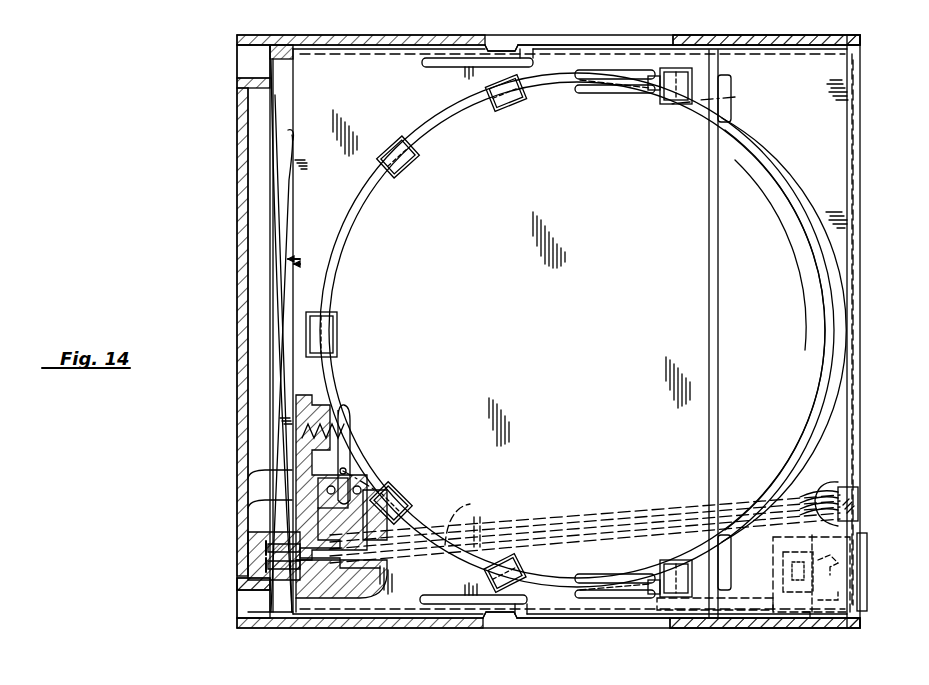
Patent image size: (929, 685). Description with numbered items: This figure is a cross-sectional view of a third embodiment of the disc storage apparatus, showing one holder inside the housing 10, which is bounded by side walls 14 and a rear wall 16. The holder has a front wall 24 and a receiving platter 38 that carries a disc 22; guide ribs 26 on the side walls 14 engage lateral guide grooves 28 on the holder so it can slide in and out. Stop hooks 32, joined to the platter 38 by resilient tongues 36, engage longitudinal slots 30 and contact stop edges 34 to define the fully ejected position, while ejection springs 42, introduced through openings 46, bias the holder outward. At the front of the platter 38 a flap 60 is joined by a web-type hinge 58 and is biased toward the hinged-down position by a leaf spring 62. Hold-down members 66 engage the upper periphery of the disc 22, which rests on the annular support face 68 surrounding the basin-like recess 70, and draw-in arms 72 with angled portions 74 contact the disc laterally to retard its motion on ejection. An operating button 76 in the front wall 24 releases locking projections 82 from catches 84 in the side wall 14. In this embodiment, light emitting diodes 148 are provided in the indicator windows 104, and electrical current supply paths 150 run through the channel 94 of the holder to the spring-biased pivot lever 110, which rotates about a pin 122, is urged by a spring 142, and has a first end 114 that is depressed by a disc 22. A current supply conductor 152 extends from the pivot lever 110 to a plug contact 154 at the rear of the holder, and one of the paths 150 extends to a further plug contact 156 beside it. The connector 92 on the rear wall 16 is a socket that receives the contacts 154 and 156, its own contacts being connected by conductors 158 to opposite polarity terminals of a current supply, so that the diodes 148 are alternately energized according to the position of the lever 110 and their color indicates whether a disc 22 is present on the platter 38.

The housing 10 is at (294, 626).
The side walls 14 is at (384, 37).
The rear wall 16 is at (236, 244).
The disc 22 is at (735, 100).
The front wall 24 is at (855, 412).
The guide ribs 26 is at (345, 57).
The lateral guide grooves 28 is at (369, 612).
The longitudinal slots 30 is at (566, 42).
The stop hooks 32 is at (503, 50).
The stop edges 34 is at (676, 42).
The resilient tongues 36 is at (450, 62).
The receiving platter 38 is at (398, 601).
The ejection springs 42 is at (300, 259).
The openings 46 is at (232, 62).
The web-type hinge 58 is at (718, 324).
The flap 60 is at (858, 180).
The leaf spring 62 is at (735, 612).
The hold-down members 66 is at (402, 162).
The support face 68 is at (322, 288).
The basin-like recess 70 is at (590, 337).
The draw-in arms 72 is at (589, 80).
The angled portion 74 is at (645, 82).
The operating button 76 is at (868, 574).
The locking projections 82 is at (814, 625).
The catches 84 is at (811, 618).
The connector 92 is at (292, 520).
The channel 94 is at (565, 537).
The indicator windows 104 is at (858, 494).
The pivot lever 110 is at (370, 432).
The first end 114 is at (342, 424).
The pin 122 is at (355, 470).
The spring 142 is at (338, 418).
The light emitting diodes 148 is at (858, 508).
The electrical current supply paths 150 is at (472, 520).
The current supply conductor 152 is at (292, 480).
The plug contact 154 is at (268, 548).
The further plug contact 156 is at (246, 588).
The conductors 158 is at (268, 565).